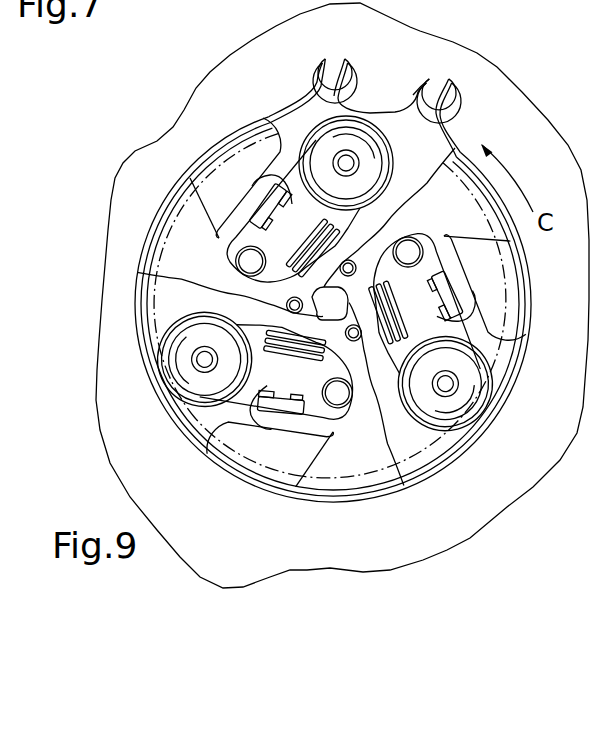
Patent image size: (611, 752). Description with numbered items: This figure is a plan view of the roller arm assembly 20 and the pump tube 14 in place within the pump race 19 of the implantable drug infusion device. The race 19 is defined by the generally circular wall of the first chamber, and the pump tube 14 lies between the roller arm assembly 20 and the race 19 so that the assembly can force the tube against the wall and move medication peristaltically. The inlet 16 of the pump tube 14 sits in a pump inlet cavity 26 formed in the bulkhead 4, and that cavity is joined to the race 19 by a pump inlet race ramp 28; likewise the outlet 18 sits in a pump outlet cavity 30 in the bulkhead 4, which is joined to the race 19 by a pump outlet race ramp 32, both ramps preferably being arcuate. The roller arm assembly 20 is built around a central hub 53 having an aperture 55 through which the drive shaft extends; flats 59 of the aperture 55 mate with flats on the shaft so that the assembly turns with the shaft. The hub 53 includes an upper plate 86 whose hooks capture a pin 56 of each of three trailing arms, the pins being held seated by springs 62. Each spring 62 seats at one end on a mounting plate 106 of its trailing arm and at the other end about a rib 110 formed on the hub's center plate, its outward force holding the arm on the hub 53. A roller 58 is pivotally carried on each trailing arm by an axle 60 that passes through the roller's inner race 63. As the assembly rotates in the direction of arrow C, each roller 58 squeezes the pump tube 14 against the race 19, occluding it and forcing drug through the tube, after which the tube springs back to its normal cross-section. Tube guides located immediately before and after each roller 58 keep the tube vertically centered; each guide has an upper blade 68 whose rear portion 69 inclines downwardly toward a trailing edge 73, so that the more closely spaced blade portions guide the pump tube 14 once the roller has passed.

The bulkhead 4 is at (342, 295).
The pump tube 14 is at (140, 303).
The inlet 16 is at (338, 32).
The outlet 18 is at (437, 57).
The pump race 19 is at (453, 442).
The roller arm assembly 20 is at (178, 222).
The pump inlet cavity 26 is at (316, 37).
The pump inlet race ramp 28 is at (319, 78).
The pump outlet cavity 30 is at (463, 78).
The pump outlet race ramp 32 is at (430, 107).
The central hub 53 is at (289, 290).
The aperture 55 is at (395, 231).
The pin 56 is at (342, 395).
The roller 58 is at (522, 312).
The flats 59 is at (355, 342).
The axle 60 is at (200, 360).
The spring 62 is at (287, 343).
The inner race 63 is at (475, 402).
The upper blade 68 is at (318, 470).
The rear portion 69 is at (243, 442).
The trailing edge 73 is at (205, 431).
The upper plate 86 is at (362, 313).
The mounting plate 106 is at (294, 204).
The rib 110 is at (300, 247).